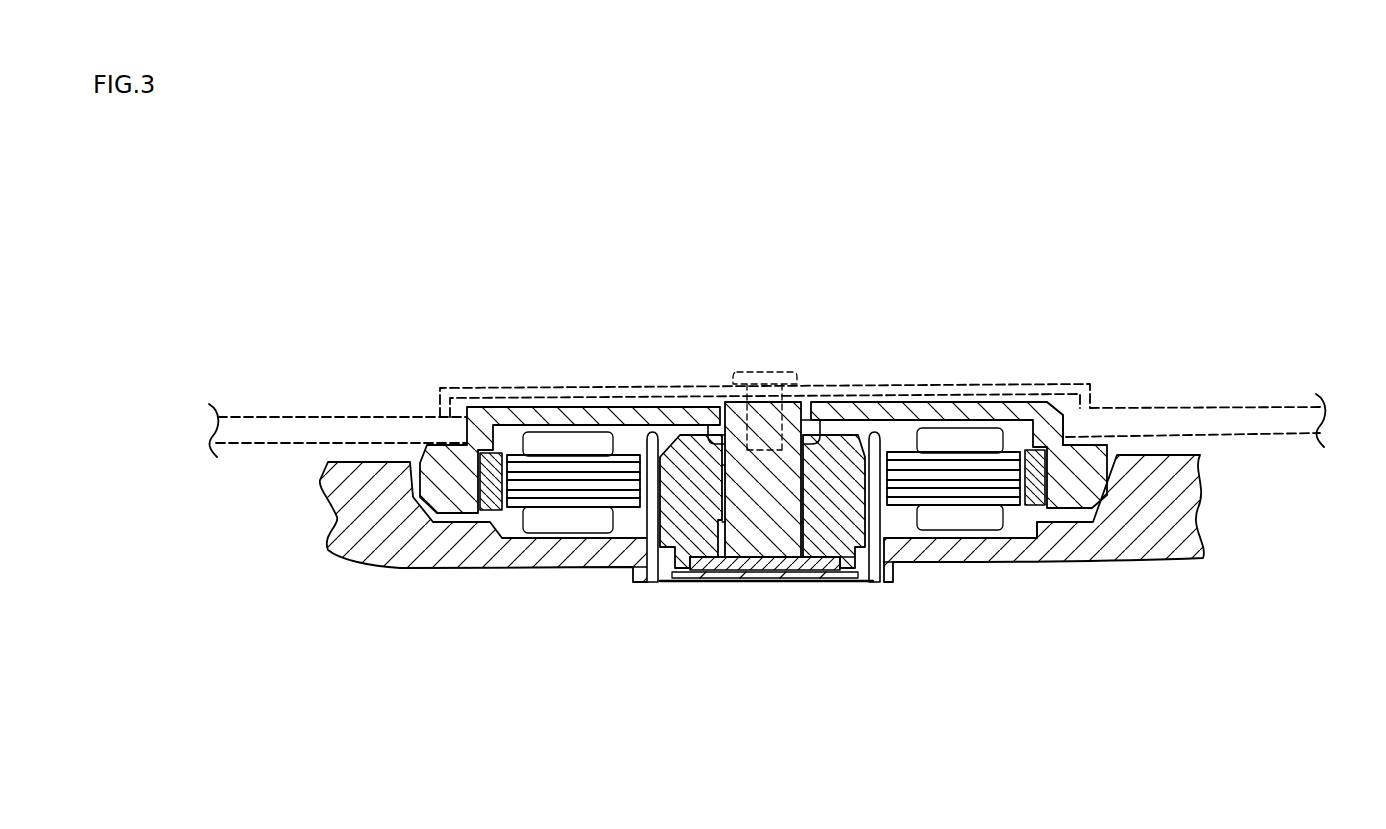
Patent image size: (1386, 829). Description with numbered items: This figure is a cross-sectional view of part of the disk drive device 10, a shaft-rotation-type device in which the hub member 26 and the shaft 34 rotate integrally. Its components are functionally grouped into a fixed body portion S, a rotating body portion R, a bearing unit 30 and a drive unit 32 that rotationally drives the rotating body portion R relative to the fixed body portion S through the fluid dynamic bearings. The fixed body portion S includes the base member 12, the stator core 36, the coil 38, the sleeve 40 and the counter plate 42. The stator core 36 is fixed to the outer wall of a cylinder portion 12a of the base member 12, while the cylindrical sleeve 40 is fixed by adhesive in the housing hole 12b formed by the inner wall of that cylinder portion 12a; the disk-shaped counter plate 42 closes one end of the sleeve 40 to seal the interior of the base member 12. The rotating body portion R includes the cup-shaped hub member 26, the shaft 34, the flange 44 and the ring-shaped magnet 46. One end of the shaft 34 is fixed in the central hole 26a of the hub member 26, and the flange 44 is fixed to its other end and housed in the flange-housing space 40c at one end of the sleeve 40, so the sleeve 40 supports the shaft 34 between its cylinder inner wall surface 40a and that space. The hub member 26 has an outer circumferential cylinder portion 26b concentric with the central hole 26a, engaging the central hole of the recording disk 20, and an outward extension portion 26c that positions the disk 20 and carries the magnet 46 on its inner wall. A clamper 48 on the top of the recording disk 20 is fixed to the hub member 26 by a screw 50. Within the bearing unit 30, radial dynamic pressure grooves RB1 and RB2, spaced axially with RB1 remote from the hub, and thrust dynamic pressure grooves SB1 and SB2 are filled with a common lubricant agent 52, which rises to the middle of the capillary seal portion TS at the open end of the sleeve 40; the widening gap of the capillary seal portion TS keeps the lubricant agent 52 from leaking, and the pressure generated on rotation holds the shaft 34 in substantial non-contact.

The disk drive device 10 is at (1076, 222).
The base member 12 is at (1160, 534).
The cylinder portion 12a is at (645, 560).
The housing hole 12b is at (862, 583).
The recording disk 20 is at (1224, 405).
The hub member 26 is at (882, 412).
The central hole 26a is at (790, 432).
The outer circumferential cylinder portion 26b is at (1052, 400).
The outward extension portion 26c is at (1076, 476).
The bearing unit 30 is at (703, 495).
The drive unit 32 is at (577, 446).
The shaft 34 is at (739, 400).
The stator core 36 is at (1036, 492).
The coil 38 is at (540, 442).
The sleeve 40 is at (689, 450).
The cylinder inner wall surface 40a is at (793, 568).
The flange-housing space 40c is at (680, 583).
The counter plate 42 is at (835, 579).
The flange 44 is at (762, 571).
The magnet 46 is at (1037, 512).
The clamper 48 is at (623, 388).
The screw 50 is at (764, 372).
The lubricant agent 52 is at (721, 445).
The rotating body portion R is at (991, 394).
The fixed body portion S is at (371, 569).
The capillary seal portion TS is at (824, 406).
The radial dynamic pressure groove RB1 is at (722, 465).
The radial dynamic pressure groove RB2 is at (722, 522).
The thrust dynamic pressure groove SB1 is at (873, 545).
The thrust dynamic pressure groove SB2 is at (803, 525).